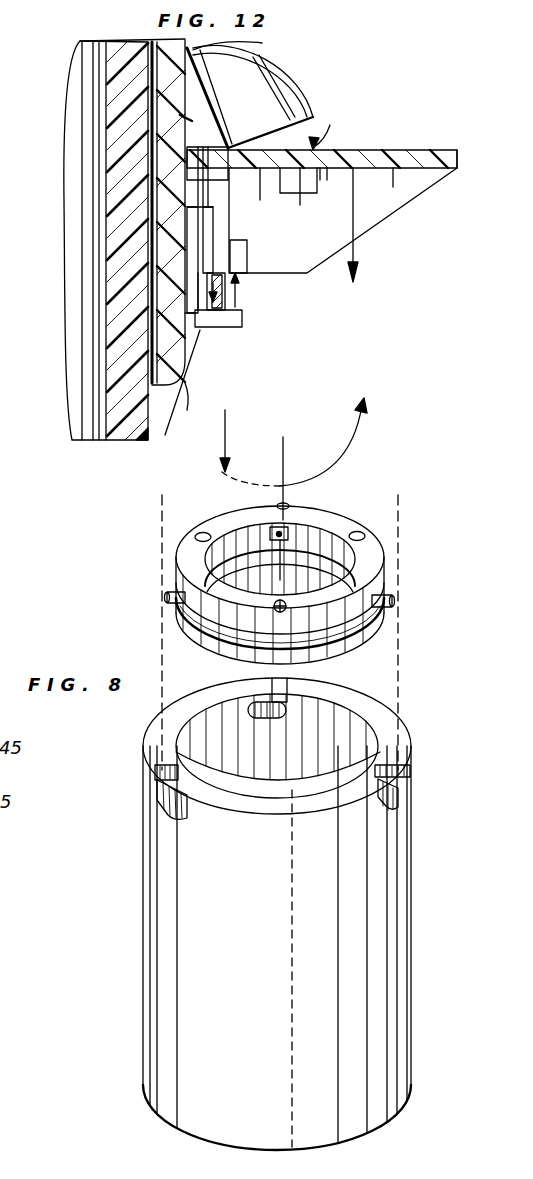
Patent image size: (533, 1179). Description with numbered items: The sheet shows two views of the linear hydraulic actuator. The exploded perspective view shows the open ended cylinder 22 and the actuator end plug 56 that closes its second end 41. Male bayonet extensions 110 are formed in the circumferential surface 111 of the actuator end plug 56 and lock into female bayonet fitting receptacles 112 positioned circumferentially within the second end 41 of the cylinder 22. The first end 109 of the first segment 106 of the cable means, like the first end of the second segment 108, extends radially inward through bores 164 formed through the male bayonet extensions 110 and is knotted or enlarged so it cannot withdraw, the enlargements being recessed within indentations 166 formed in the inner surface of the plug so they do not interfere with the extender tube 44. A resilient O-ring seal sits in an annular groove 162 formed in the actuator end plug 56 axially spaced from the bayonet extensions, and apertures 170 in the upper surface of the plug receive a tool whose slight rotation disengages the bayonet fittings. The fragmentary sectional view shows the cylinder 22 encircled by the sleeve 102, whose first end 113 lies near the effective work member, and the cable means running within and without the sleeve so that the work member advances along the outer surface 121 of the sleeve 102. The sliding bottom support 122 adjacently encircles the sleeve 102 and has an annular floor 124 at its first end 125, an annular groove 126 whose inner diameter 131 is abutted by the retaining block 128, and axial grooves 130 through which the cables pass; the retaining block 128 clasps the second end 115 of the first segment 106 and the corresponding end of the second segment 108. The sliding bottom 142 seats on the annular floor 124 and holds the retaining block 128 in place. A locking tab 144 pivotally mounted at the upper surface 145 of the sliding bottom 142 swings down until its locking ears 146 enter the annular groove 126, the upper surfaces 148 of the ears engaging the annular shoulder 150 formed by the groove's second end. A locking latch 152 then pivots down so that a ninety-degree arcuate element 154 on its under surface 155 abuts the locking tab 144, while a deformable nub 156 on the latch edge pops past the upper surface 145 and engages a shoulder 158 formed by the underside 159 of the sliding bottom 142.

In FIG. 12, the cylinder 22 is at (115, 255).
In FIG. 8, the cylinder 22 is at (397, 920).
In FIG. 12, the extender tube 44 is at (160, 213).
In FIG. 12, the sleeve 102 is at (163, 333).
In FIG. 12, the outer surface of the sleeve 121 is at (190, 122).
In FIG. 12, the locking latch 152 is at (231, 146).
In FIG. 12, the arcuate element 154 is at (287, 83).
In FIG. 12, the under surface of the locking latch 155 is at (208, 95).
In FIG. 12, the deformable nub 156 is at (250, 44).
In FIG. 12, the upper surface of the sliding bottom 145 is at (410, 150).
In FIG. 12, the sliding bottom 142 is at (343, 225).
In FIG. 12, the underside of the sliding bottom 159 is at (433, 170).
In FIG. 12, the upper surfaces of the ears 148 is at (275, 183).
In FIG. 12, the shoulder 158 is at (327, 170).
In FIG. 12, the locking ears 146 is at (322, 175).
In FIG. 12, the locking tab 144 is at (335, 130).
In FIG. 12, the axial grooves 130 is at (207, 250).
In FIG. 12, the second end of the first cable segment 115 is at (228, 266).
In FIG. 12, the annular groove 126 is at (233, 309).
In FIG. 12, the retaining block 128 is at (240, 300).
In FIG. 12, the annular shoulder 150 is at (238, 283).
In FIG. 12, the annular floor 124 is at (250, 315).
In FIG. 12, the sliding bottom support 122 is at (243, 331).
In FIG. 12, the inner diameter of the annular groove 131 is at (223, 333).
In FIG. 12, the first end of the sliding bottom support 125 is at (211, 335).
In FIG. 12, the second segment of the cable means 108 is at (190, 378).
In FIG. 12, the first end of the sleeve 113 is at (172, 412).
In FIG. 8, the first segment of the cable means 106 is at (285, 444).
In FIG. 8, the actuator end plug 56 is at (225, 648).
In FIG. 8, the circumferential surface of the actuator end plug 111 is at (227, 623).
In FIG. 8, the annular groove of the actuator end plug 162 is at (372, 625).
In FIG. 8, the indentations 166 is at (280, 562).
In FIG. 8, the apertures 170 is at (203, 532).
In FIG. 8, the first end of the first cable segment 109 is at (278, 503).
In FIG. 8, the male bayonet extensions 110 is at (285, 502).
In FIG. 8, the bores 164 is at (168, 603).
In FIG. 8, the second end of the cylinder 41 is at (403, 742).
In FIG. 8, the female bayonet fitting receptacles 112 is at (273, 719).